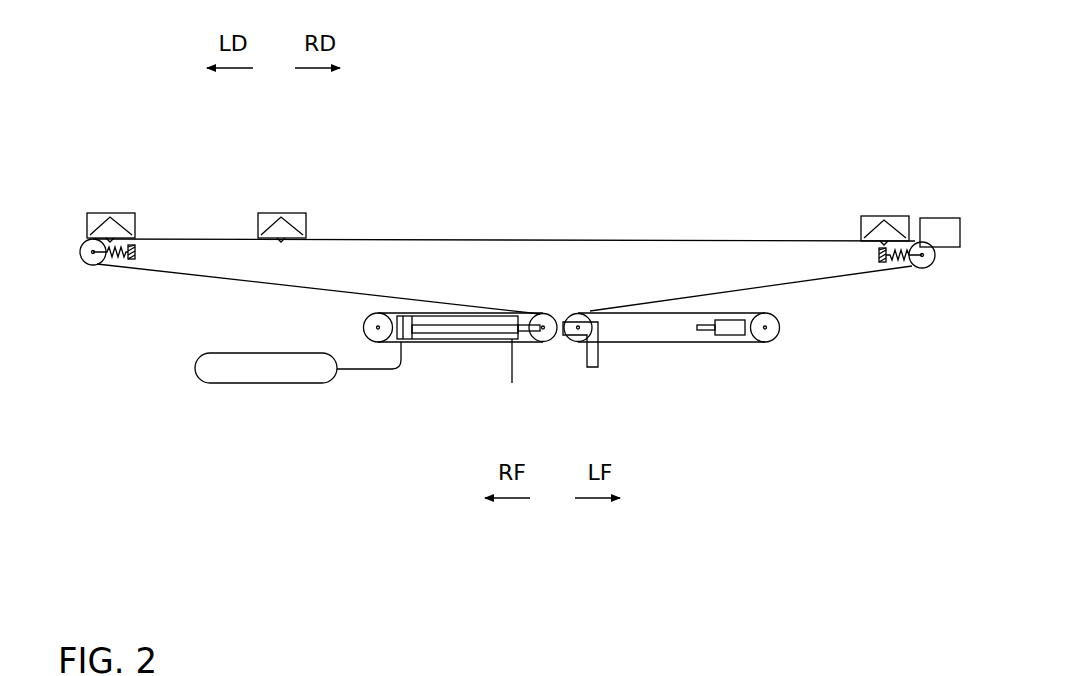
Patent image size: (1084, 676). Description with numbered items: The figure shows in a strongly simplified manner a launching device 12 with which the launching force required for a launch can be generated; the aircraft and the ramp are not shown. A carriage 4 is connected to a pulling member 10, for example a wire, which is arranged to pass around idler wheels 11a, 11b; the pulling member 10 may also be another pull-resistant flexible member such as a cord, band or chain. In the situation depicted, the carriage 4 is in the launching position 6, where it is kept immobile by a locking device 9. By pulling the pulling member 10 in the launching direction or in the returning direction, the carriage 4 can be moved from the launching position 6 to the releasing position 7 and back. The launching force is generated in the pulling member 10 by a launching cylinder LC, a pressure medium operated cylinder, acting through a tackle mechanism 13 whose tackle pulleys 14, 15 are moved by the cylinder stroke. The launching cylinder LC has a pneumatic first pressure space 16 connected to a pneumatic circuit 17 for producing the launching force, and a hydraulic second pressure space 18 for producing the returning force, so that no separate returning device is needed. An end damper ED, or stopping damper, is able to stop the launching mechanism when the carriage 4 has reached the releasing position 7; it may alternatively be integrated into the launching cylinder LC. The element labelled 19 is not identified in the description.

The launching position 6 is at (840, 118).
The releasing position 7 is at (95, 127).
The launching device 12 is at (633, 130).
The pulling member 10 is at (682, 238).
The idler wheel 11a is at (83, 252).
The idler wheel 11b is at (920, 268).
The carriage 4 is at (867, 218).
The locking device 9 is at (940, 228).
The tackle mechanism 13 is at (557, 367).
The tackle pulley 14 is at (546, 316).
The tackle pulley 15 is at (578, 318).
The first pressure space 16 is at (405, 315).
The pneumatic circuit 17 is at (370, 372).
The second pressure space 18 is at (438, 318).
The sensor 19 is at (510, 365).
The launching cylinder LC is at (443, 359).
The end damper ED is at (728, 320).